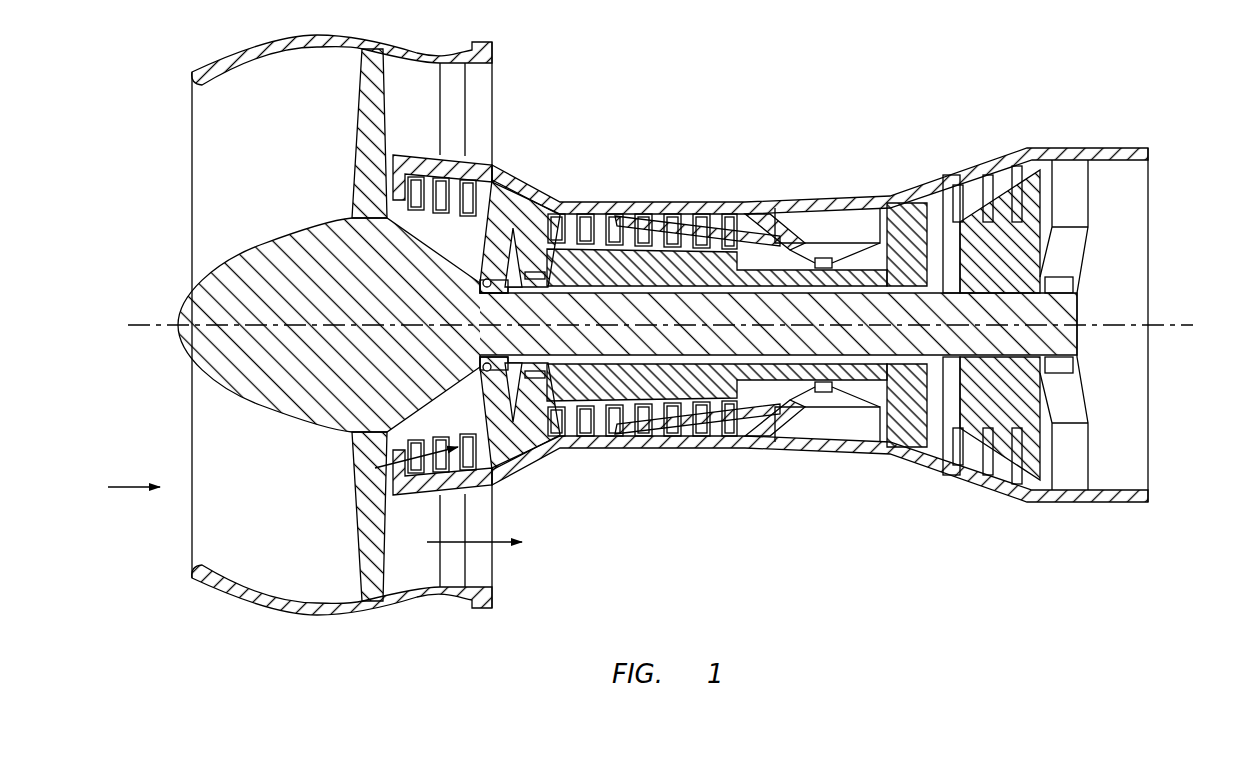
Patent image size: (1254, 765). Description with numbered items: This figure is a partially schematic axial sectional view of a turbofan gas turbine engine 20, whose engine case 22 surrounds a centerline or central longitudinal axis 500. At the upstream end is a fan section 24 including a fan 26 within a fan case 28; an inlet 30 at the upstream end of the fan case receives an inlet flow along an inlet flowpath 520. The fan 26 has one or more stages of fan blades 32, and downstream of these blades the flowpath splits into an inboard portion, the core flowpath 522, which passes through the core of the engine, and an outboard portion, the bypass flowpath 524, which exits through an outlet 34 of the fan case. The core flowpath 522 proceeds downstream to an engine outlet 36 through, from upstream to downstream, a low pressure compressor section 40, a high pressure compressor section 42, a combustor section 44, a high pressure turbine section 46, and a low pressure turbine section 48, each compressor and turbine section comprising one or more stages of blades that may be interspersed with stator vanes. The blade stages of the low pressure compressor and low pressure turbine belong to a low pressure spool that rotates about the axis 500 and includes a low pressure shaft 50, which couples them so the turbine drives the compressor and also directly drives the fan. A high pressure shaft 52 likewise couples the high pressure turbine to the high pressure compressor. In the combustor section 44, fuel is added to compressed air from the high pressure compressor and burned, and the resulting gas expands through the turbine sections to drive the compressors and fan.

The gas turbine engine 20 is at (515, 75).
The engine case 22 is at (697, 453).
The fan section 24 is at (333, 627).
The fan 26 is at (350, 518).
The fan case 28 is at (387, 598).
The inlet 30 is at (178, 543).
The fan blades 32 is at (376, 483).
The outlet of the fan case 34 is at (497, 120).
The engine outlet 36 is at (1155, 450).
The low pressure compressor section 40 is at (458, 195).
The high pressure compressor section 42 is at (637, 233).
The combustor section 44 is at (820, 232).
The high pressure turbine section 46 is at (895, 233).
The low pressure turbine section 48 is at (1012, 190).
The low pressure shaft 50 is at (822, 343).
The high pressure shaft 52 is at (863, 370).
The central longitudinal axis 500 is at (147, 322).
The inlet flowpath 520 is at (130, 486).
The core flowpath 522 is at (423, 453).
The bypass flowpath 524 is at (473, 543).